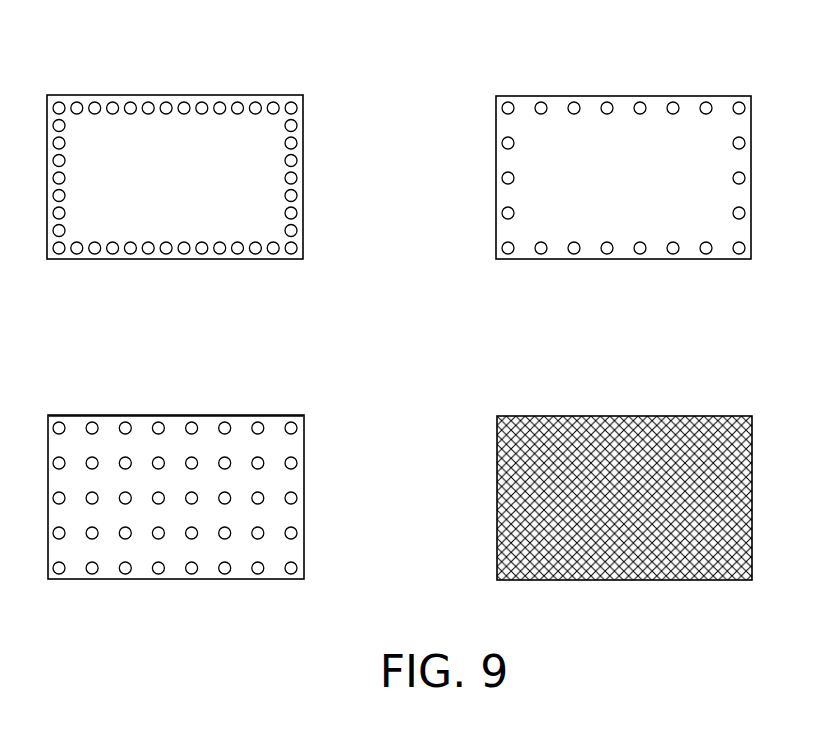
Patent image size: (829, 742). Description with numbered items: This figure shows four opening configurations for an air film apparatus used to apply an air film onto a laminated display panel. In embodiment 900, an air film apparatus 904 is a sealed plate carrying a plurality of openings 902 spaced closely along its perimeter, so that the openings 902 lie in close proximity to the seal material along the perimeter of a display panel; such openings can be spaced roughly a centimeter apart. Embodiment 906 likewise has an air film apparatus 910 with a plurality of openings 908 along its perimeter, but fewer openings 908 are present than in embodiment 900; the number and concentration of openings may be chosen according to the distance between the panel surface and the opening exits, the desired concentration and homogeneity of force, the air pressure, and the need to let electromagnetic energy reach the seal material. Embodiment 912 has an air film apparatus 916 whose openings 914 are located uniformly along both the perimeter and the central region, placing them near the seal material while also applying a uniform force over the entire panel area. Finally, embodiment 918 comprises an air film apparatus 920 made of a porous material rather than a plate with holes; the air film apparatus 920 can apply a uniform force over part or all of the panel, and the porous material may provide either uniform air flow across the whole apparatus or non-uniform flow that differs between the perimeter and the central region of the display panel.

The embodiment 900 is at (370, 45).
The openings 902 is at (200, 242).
The air film apparatus 904 is at (260, 95).
The embodiment 906 is at (716, 58).
The openings 908 is at (640, 243).
The air film apparatus 910 is at (656, 96).
The embodiment 912 is at (303, 373).
The openings 914 is at (124, 415).
The air film apparatus 916 is at (270, 415).
The embodiment 918 is at (718, 377).
The air film apparatus 920 is at (656, 416).